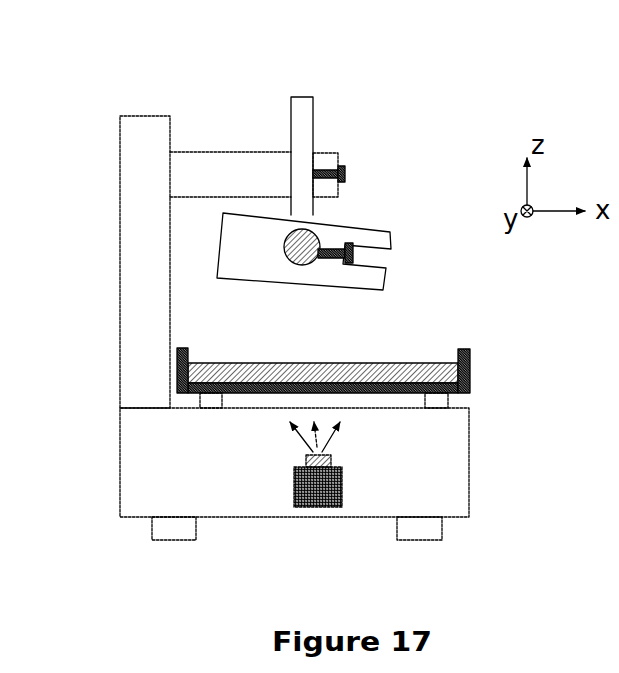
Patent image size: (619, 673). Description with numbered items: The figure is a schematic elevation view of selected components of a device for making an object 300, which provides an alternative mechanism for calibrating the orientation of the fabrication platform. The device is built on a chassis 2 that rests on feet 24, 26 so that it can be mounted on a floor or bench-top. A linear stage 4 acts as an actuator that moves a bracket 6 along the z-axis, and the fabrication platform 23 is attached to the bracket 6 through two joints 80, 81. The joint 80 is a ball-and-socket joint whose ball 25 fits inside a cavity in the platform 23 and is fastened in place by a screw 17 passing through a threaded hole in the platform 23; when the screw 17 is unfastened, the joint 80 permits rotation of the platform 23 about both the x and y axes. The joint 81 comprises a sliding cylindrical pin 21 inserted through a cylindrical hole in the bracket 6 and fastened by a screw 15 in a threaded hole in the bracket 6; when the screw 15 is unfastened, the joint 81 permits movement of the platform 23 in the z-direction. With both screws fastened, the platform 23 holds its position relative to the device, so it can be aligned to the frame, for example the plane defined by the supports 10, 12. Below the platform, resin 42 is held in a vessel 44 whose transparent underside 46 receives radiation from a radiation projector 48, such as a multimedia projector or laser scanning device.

The device for making an object 300 is at (80, 225).
The chassis 2 is at (458, 462).
The linear stage 4 is at (141, 131).
The bracket 6 is at (200, 165).
The sliding cylindrical pin 21 is at (298, 110).
The joint 81 is at (282, 140).
The screw 15 is at (340, 170).
The screw 17 is at (349, 250).
The fabrication platform 23 is at (242, 257).
The ball 25 is at (300, 248).
The joint 80 is at (317, 268).
The resin 42 is at (425, 368).
The vessel 44 is at (470, 362).
The support 10 is at (200, 397).
The support 12 is at (440, 397).
The underside of the vessel 46 is at (245, 395).
The radiation projector 48 is at (313, 495).
The foot 24 is at (178, 528).
The foot 26 is at (417, 528).